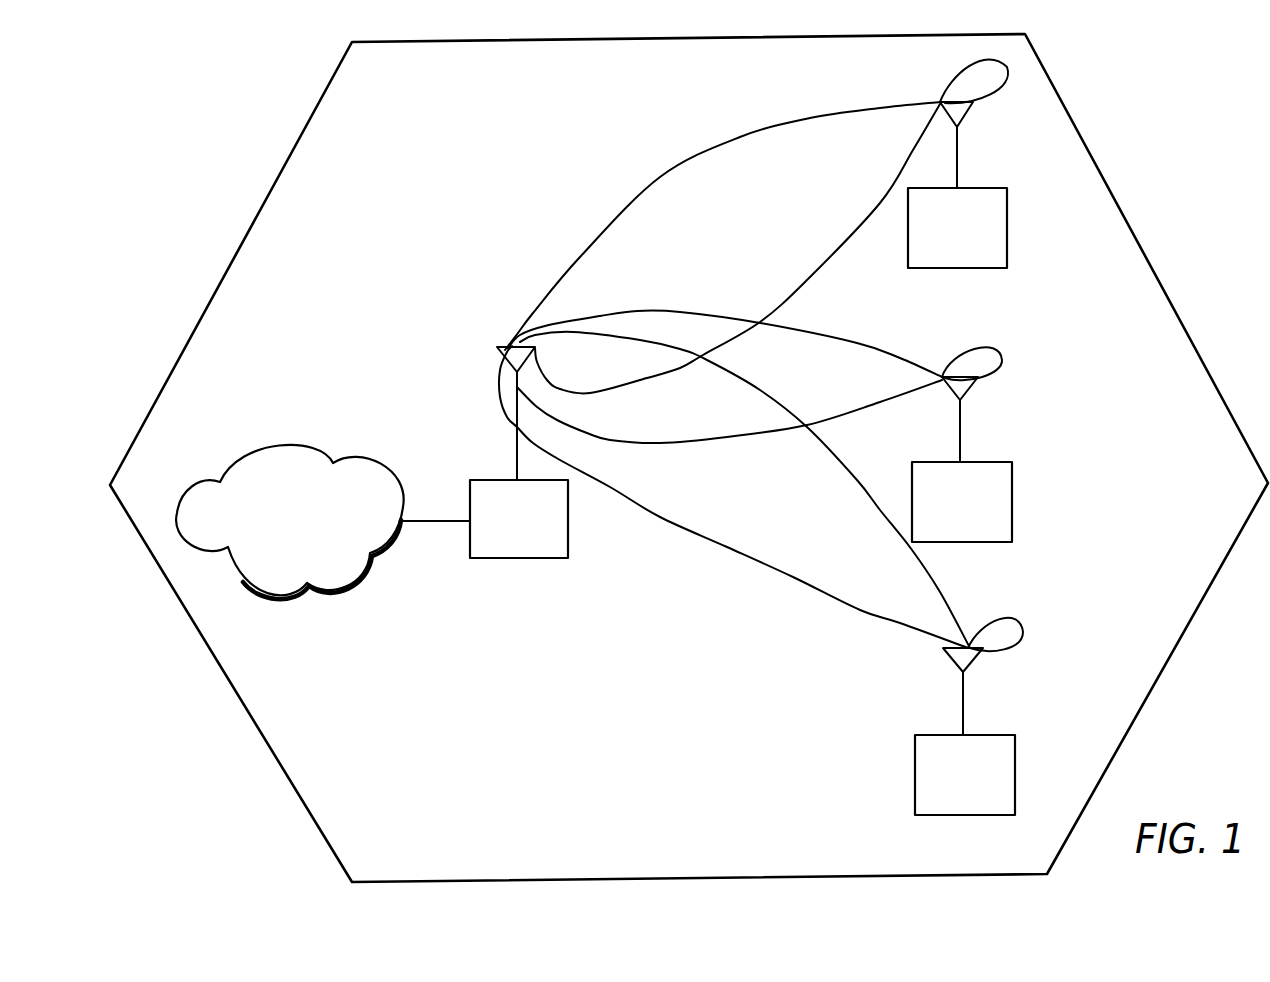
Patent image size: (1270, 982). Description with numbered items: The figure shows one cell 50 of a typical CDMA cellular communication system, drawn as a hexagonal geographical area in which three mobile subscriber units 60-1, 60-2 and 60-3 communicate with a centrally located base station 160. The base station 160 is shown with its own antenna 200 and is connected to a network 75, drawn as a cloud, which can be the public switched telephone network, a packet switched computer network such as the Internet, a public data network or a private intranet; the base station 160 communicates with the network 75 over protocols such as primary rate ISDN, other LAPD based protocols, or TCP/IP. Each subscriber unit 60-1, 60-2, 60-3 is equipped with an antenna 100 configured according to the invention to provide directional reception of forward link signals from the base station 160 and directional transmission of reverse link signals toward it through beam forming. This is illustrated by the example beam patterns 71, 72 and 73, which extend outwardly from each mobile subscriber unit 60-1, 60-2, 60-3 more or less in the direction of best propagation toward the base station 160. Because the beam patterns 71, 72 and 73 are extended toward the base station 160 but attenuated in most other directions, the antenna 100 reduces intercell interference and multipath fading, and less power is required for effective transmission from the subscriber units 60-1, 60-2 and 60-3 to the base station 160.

The cell 50 is at (505, 741).
The network 75 is at (279, 527).
The base station 160 is at (519, 519).
The base station antenna 200 is at (517, 429).
The beam pattern 71 is at (660, 178).
The beam pattern 72 is at (856, 342).
The beam pattern 73 is at (940, 591).
The antenna 100 is at (957, 157).
The mobile subscriber unit 60-1 is at (957, 228).
The mobile subscriber unit 60-2 is at (962, 502).
The mobile subscriber unit 60-3 is at (965, 775).